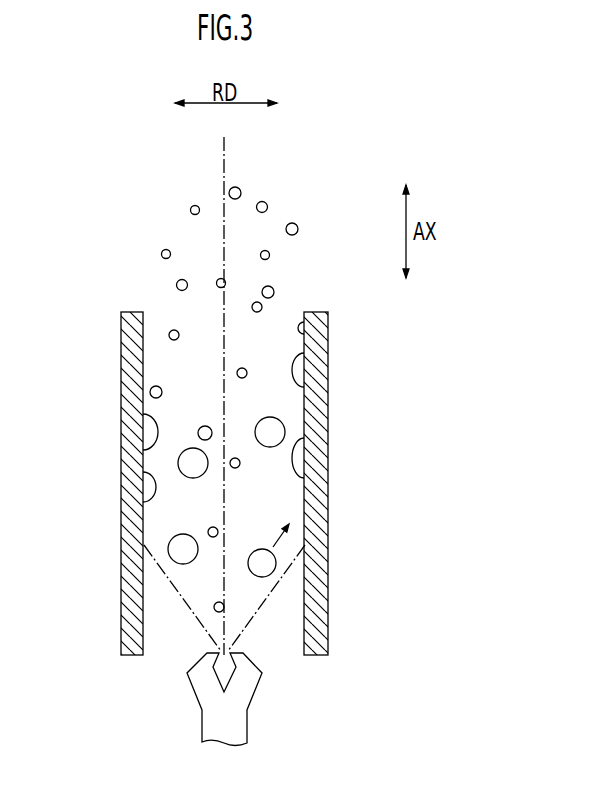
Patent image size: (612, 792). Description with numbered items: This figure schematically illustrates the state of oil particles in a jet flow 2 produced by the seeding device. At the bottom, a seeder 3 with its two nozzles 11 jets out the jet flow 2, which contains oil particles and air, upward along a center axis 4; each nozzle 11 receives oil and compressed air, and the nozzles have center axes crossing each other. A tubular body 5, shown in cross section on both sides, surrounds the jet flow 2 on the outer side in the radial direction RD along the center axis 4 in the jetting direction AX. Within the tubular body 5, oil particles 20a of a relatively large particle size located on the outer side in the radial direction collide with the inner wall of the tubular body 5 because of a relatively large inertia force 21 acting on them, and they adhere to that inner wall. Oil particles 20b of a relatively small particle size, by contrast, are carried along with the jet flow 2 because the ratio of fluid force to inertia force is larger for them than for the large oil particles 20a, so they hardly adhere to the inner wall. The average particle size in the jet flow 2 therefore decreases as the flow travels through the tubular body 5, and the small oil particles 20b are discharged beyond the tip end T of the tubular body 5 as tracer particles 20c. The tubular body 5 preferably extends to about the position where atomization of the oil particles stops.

The jet flow 2 is at (260, 612).
The seeder 3 is at (226, 699).
The center axis 4 is at (224, 162).
The tubular body 5 is at (328, 338).
The nozzle 11 is at (204, 656).
The oil particles of a relatively large particle size 20a is at (273, 428).
The oil particles of a relatively small particle size 20b is at (200, 427).
The tracer particles 20c is at (241, 189).
The inertia force 21 is at (280, 542).
The tip end T is at (130, 312).